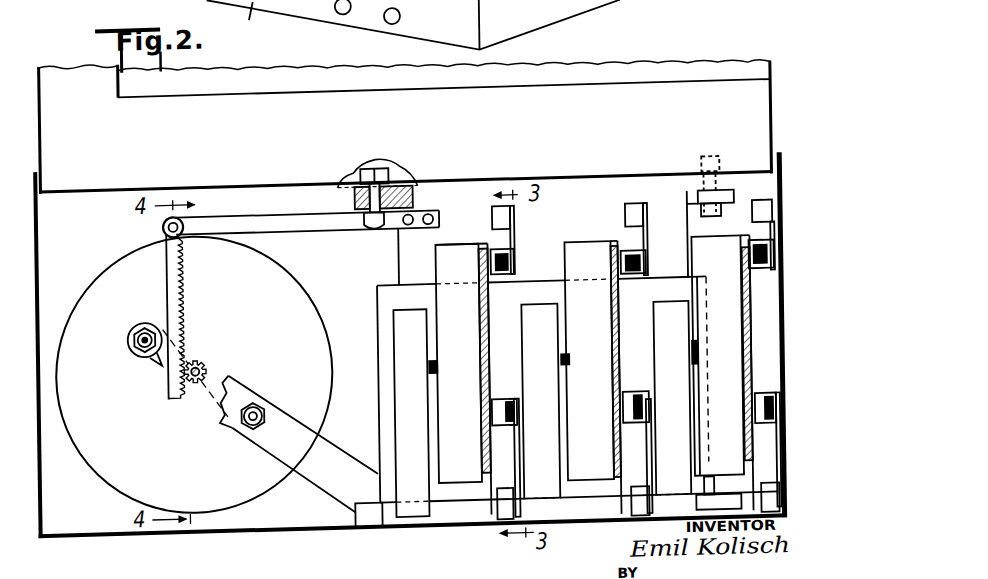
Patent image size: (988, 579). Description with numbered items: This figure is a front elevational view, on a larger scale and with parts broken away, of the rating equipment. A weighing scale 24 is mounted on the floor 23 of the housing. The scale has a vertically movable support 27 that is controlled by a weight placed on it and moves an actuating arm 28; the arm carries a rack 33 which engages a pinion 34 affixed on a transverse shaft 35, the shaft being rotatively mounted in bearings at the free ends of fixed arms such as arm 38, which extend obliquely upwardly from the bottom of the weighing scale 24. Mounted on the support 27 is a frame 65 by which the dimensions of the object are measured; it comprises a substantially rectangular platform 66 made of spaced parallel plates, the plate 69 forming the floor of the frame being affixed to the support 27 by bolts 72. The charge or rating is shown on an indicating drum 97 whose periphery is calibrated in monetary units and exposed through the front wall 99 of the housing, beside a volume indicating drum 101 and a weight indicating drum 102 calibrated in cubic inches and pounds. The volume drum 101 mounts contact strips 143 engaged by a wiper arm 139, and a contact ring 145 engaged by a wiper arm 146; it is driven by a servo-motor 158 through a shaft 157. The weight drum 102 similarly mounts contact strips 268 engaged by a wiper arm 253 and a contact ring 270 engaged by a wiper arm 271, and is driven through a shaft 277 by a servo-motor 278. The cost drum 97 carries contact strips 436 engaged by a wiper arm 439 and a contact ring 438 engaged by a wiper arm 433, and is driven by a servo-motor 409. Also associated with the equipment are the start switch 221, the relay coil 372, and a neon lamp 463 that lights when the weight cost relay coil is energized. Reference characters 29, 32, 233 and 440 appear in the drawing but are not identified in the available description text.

The floor 23 is at (281, 524).
The weighing scale 24 is at (376, 290).
The vertically movable support 27 is at (401, 253).
The actuating arm 28 is at (288, 210).
The pivot holes 29 is at (434, 213).
The pivot 32 is at (185, 228).
The rack 33 is at (168, 266).
The pinion 34 is at (203, 356).
The transverse shaft 35 is at (197, 397).
The fixed arm 38 is at (332, 448).
The frame 65 is at (703, 108).
The platform 66 is at (575, 90).
The plate 69 is at (405, 173).
The bolt 72 is at (377, 177).
The indicating drum 97 is at (701, 241).
The front wall 99 is at (480, 21).
The volume indicating drum 101 is at (463, 246).
The weight indicating drum 102 is at (589, 250).
The wiper arm 139 is at (518, 236).
The contact strips 143 is at (482, 266).
The contact ring 145 is at (482, 322).
The wiper arm 146 is at (512, 403).
The shaft 157 is at (433, 374).
The servo-motor 158 is at (402, 335).
The start switch 221 is at (245, 27).
The member 233 is at (106, 8).
The wiper arm 253 is at (641, 247).
The contact strips 268 is at (615, 253).
The contact ring 270 is at (619, 324).
The wiper arm 271 is at (642, 454).
The shaft 277 is at (563, 352).
The servo-motor 278 is at (544, 322).
The coil 372 is at (343, 17).
The servo-motor 409 is at (655, 365).
The wiper arm 433 is at (746, 462).
The contact strips 436 is at (743, 272).
The contact ring 438 is at (744, 317).
The wiper arm 439 is at (754, 240).
The slide 440 is at (692, 352).
The neon lamp 463 is at (394, 26).